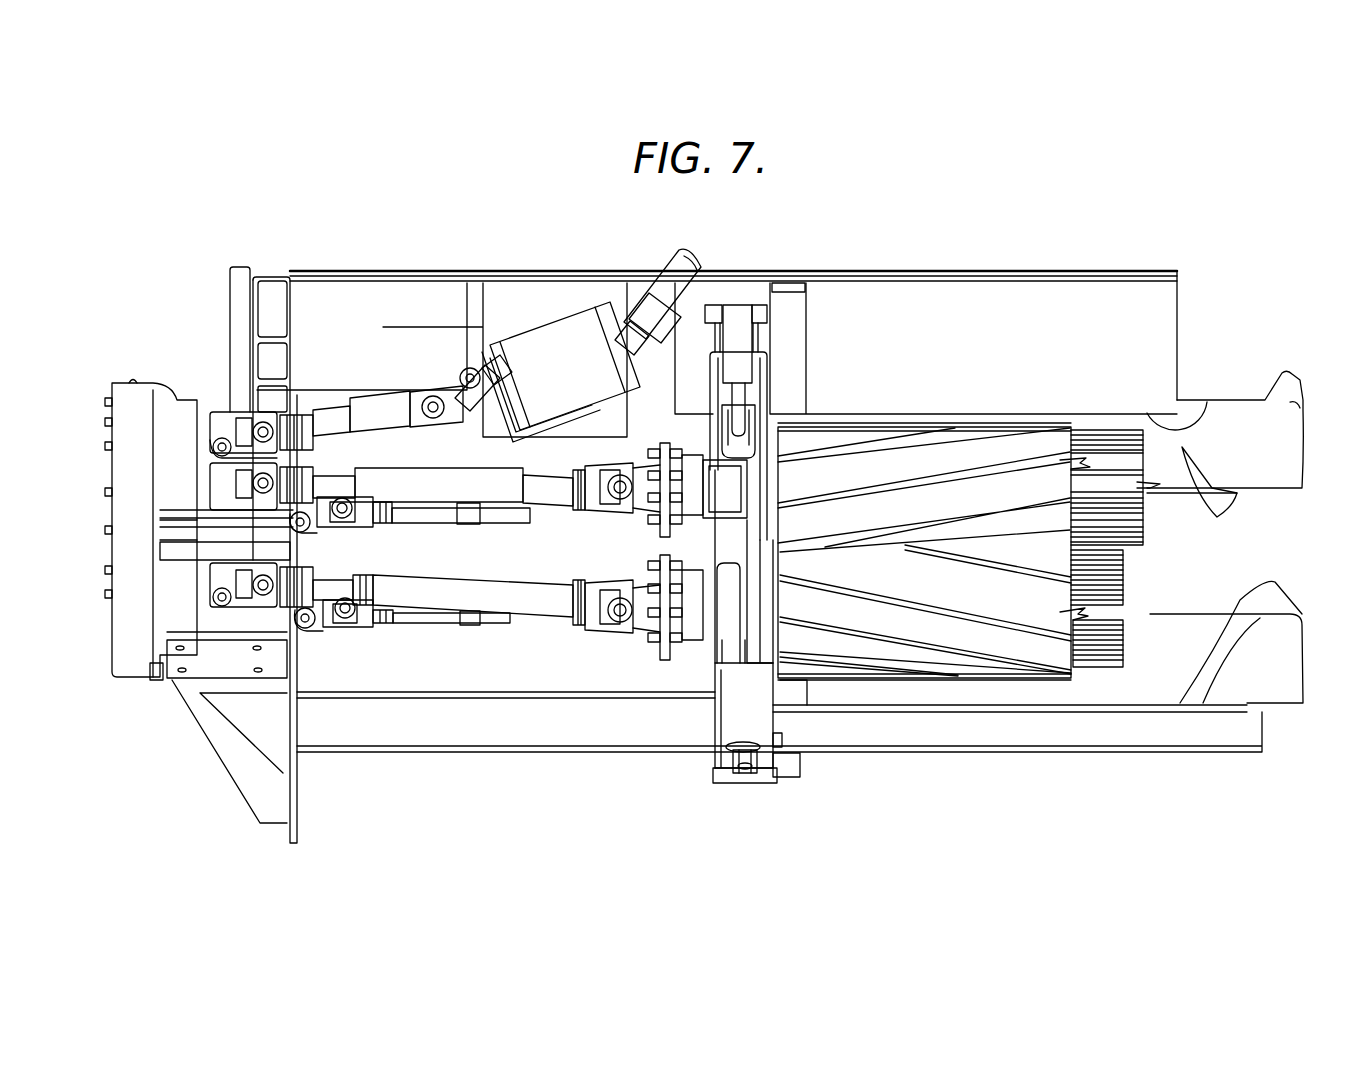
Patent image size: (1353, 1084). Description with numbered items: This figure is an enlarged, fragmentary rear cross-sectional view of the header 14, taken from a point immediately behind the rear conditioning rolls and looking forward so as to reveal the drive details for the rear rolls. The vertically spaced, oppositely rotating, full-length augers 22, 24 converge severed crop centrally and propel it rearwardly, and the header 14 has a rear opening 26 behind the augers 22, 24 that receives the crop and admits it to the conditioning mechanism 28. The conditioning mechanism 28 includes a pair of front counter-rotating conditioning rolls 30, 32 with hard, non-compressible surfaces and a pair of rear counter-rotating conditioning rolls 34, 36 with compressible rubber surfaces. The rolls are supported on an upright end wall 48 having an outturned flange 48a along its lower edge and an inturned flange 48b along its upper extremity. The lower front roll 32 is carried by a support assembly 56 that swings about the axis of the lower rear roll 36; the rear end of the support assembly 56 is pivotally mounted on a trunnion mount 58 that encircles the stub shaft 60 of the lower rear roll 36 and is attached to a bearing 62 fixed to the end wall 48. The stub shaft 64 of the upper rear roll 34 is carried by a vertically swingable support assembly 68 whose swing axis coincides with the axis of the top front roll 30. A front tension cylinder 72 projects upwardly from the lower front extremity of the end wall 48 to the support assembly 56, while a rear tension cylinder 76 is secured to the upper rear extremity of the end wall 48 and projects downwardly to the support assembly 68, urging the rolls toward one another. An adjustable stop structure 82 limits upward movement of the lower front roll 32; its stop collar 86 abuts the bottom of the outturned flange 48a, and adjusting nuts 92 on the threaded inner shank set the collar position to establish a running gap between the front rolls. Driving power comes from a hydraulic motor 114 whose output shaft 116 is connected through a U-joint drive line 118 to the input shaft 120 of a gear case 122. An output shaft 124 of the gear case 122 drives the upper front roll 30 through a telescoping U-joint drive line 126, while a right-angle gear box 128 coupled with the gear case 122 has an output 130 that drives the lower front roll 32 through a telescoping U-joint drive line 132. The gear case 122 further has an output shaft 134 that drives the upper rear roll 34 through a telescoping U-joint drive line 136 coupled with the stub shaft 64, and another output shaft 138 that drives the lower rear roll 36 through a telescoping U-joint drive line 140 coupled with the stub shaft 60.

The header 14 is at (874, 252).
The auger 22 is at (1278, 383).
The auger 24 is at (1284, 600).
The rear opening 26 is at (1203, 403).
The conditioning mechanism 28 is at (958, 414).
The top front conditioning roll 30 is at (1158, 532).
The lower front conditioning roll 32 is at (1127, 638).
The upper rear conditioning roll 34 is at (1044, 415).
The lower rear conditioning roll 36 is at (1029, 682).
The end wall 48 is at (768, 374).
The outturned flange 48a is at (722, 729).
The inturned flange 48b is at (710, 353).
The support assembly 56 is at (731, 650).
The trunnion mount 58 is at (749, 606).
The stub shaft 60 is at (703, 622).
The bearing 62 is at (761, 631).
The stub shaft 64 is at (758, 488).
The support assembly 68 is at (737, 452).
The tension hydraulic cylinder 72 is at (742, 777).
The tension hydraulic cylinder 76 is at (744, 337).
The adjustable stop structure 82 is at (777, 760).
The stop collar 86 is at (760, 742).
The adjusting nuts 92 is at (710, 768).
The hydraulic motor 114 is at (565, 313).
The output shaft 116 is at (488, 437).
The upper drive shaft 118 is at (333, 420).
The input shaft 120 is at (207, 418).
The gear case 122 is at (138, 396).
The output shaft 124 is at (203, 535).
The telescoping U-joint drive line 126 is at (430, 506).
The gear box 128 is at (255, 552).
The output 130 is at (327, 632).
The telescoping U-joint drive line 132 is at (410, 620).
The output shaft 134 is at (209, 478).
The telescoping U-joint drive line 136 is at (435, 472).
The output shaft 138 is at (209, 592).
The telescoping U-joint drive line 140 is at (500, 613).